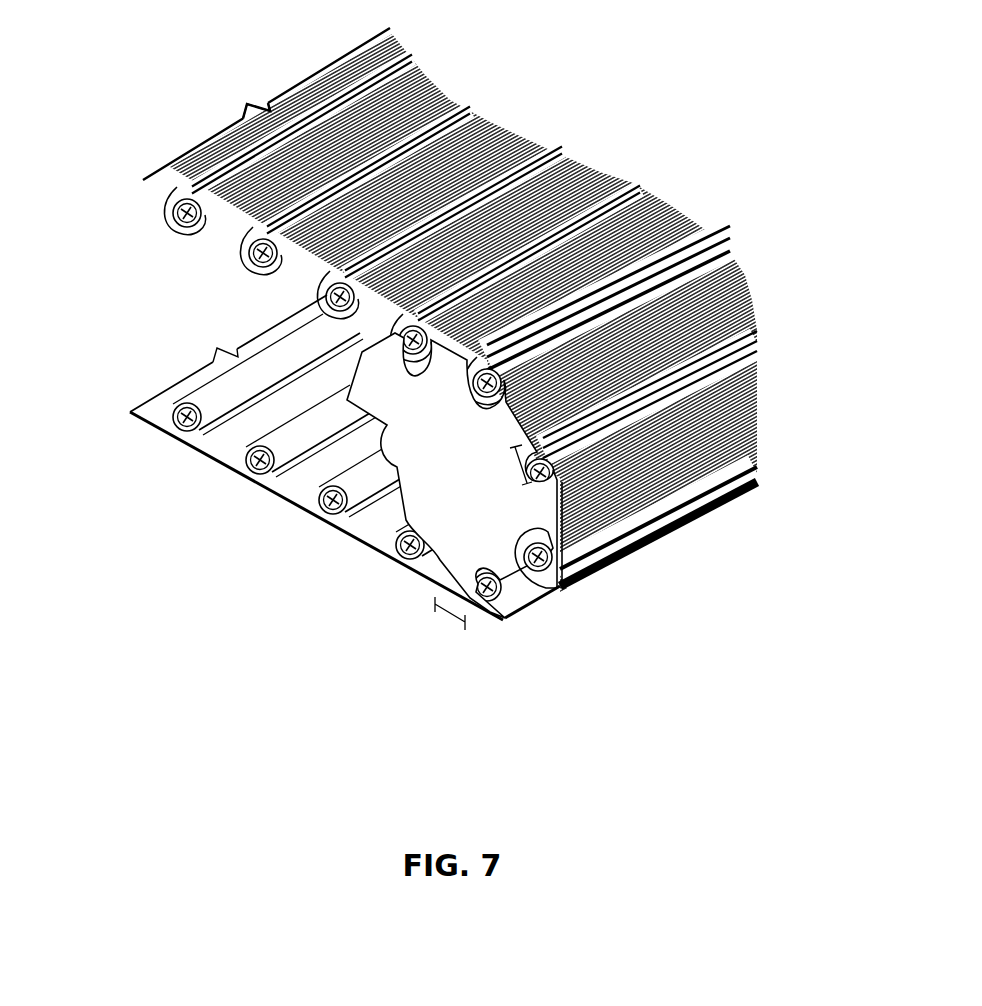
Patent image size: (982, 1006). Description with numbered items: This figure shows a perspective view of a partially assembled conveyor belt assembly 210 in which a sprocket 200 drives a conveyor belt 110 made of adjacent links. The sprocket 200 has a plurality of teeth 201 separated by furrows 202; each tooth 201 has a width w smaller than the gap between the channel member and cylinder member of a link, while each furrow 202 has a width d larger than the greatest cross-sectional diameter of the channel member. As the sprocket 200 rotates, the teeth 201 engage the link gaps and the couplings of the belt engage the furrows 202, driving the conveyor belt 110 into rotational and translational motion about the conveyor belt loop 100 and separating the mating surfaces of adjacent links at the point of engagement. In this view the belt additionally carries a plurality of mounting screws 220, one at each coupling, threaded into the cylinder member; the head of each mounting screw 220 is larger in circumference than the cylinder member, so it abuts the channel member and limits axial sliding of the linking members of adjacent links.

The conveyor belt loop 100 is at (493, 350).
The conveyor belt 110 is at (663, 220).
The sprocket 200 is at (447, 487).
The teeth 201 is at (527, 577).
The furrows 202 is at (527, 600).
The conveyor belt assembly 210 is at (697, 597).
The mounting screws 220 is at (258, 465).